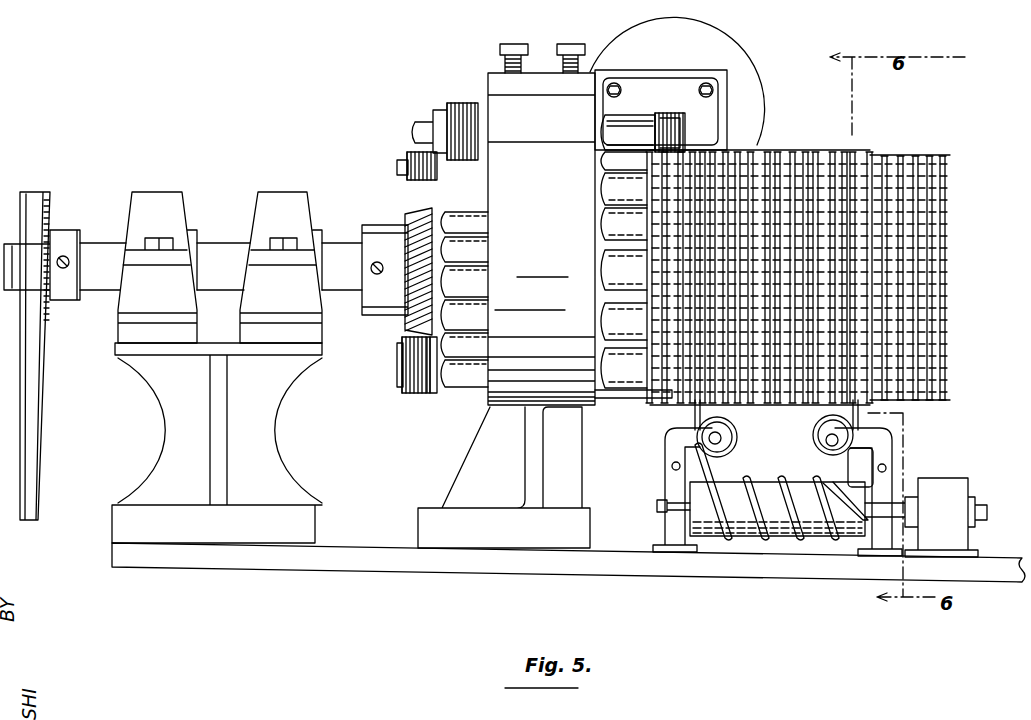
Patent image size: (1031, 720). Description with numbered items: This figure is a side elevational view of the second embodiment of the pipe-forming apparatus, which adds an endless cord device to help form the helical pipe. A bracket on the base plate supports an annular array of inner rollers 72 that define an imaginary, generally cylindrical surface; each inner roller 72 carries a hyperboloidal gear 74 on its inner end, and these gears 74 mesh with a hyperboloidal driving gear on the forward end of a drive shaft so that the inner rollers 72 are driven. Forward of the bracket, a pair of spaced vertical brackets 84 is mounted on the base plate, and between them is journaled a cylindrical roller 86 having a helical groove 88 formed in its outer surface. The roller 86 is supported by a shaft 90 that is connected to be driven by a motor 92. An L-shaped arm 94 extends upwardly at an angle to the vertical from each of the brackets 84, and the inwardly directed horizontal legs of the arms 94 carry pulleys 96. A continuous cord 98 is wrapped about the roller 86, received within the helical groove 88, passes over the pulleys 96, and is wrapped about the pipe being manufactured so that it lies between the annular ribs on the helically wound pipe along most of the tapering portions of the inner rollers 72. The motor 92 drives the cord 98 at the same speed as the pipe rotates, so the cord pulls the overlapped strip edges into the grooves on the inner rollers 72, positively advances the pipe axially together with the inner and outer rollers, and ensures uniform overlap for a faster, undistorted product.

The inner rollers 72 is at (616, 392).
The hyperboloidal gear 74 is at (400, 172).
The vertical brackets 84 is at (668, 526).
The cylindrical roller 86 is at (710, 534).
The helical groove 88 is at (840, 491).
The shaft 90 is at (658, 505).
The motor 92 is at (953, 490).
The L-shaped arm 94 is at (665, 432).
The pulleys 96 is at (813, 438).
The continuous cord 98 is at (763, 537).